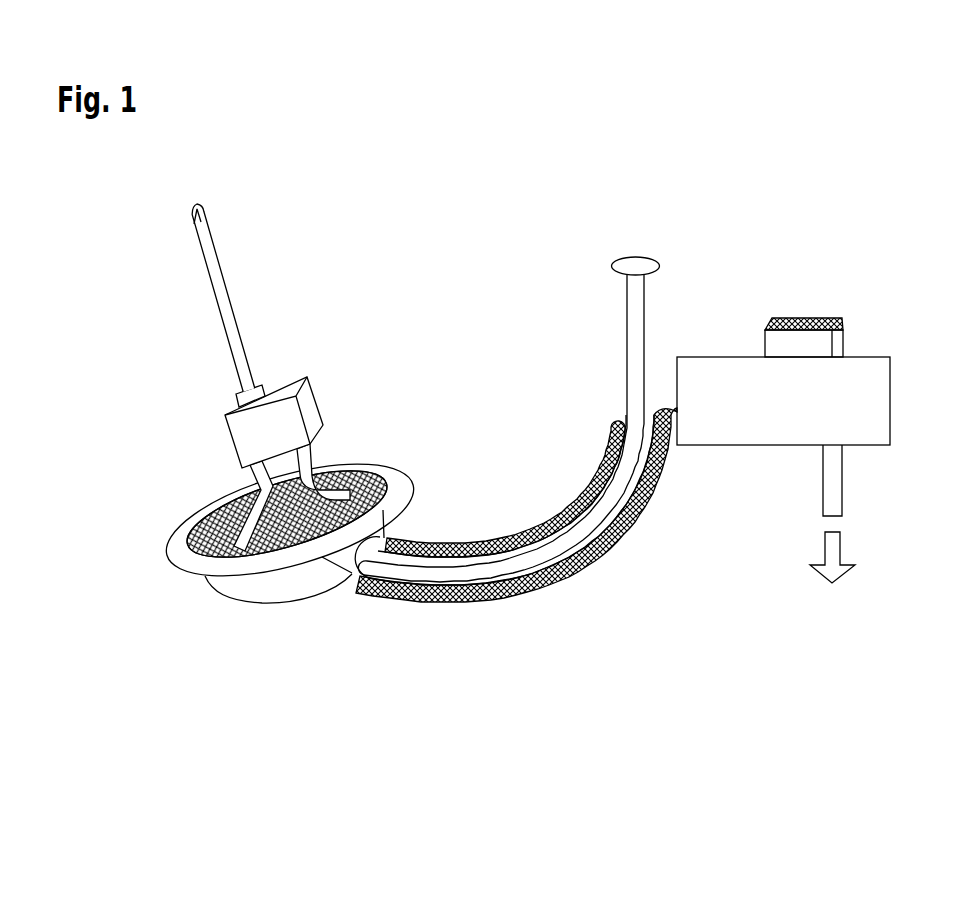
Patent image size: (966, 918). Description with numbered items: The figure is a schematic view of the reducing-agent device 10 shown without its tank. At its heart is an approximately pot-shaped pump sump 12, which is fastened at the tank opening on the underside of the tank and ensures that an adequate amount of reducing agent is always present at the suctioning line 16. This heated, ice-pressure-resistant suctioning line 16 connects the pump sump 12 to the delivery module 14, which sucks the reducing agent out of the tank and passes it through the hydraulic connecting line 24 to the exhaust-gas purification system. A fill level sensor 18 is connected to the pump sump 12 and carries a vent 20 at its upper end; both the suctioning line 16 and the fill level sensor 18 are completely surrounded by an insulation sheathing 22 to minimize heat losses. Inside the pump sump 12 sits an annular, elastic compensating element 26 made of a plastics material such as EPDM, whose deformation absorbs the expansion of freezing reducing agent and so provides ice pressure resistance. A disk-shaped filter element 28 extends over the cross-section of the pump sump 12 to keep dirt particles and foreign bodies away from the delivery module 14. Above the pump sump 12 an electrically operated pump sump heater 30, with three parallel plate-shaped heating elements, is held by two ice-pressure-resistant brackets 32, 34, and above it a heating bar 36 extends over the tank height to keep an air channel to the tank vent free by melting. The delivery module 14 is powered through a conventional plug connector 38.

The device 10 is at (493, 235).
The pump sump 12 is at (222, 583).
The delivery module 14 is at (878, 402).
The suctioning line 16 is at (543, 565).
The fill level sensor 18 is at (533, 557).
The vent 20 is at (638, 262).
The insulation sheathing 22 is at (593, 553).
The hydraulic connecting line 24 is at (836, 496).
The compensating element 26 is at (190, 536).
The filter element 28 is at (267, 553).
The pump sump heater 30 is at (315, 408).
The bracket 32 is at (222, 508).
The bracket 34 is at (398, 468).
The heating bar 36 is at (208, 270).
The plug connector 38 is at (810, 318).